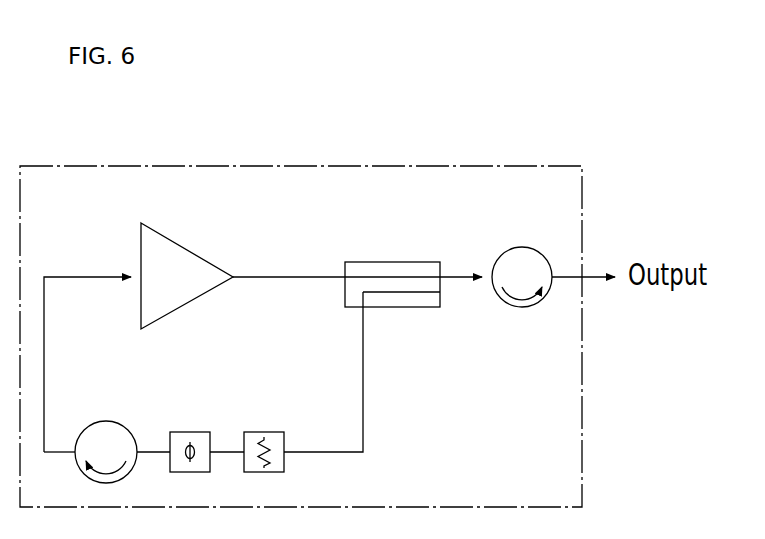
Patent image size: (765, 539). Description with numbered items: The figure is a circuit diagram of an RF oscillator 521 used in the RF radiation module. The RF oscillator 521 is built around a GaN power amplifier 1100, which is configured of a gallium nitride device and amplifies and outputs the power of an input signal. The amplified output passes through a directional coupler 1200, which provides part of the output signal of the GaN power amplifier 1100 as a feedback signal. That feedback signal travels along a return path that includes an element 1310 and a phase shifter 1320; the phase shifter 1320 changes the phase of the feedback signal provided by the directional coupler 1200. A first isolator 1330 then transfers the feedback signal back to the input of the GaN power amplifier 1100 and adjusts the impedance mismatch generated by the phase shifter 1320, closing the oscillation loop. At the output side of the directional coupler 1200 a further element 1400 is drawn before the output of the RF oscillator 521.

The RF oscillator 521 is at (301, 165).
The GaN power amplifier 1100 is at (186, 246).
The directional coupler 1200 is at (440, 262).
The attenuator 1310 is at (285, 432).
The phase shifter 1320 is at (210, 432).
The first isolator 1330 is at (107, 421).
The circulator 1400 is at (521, 247).